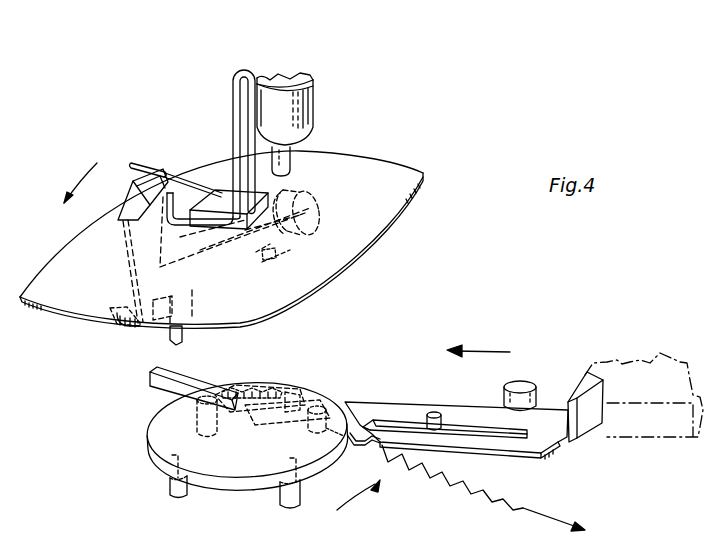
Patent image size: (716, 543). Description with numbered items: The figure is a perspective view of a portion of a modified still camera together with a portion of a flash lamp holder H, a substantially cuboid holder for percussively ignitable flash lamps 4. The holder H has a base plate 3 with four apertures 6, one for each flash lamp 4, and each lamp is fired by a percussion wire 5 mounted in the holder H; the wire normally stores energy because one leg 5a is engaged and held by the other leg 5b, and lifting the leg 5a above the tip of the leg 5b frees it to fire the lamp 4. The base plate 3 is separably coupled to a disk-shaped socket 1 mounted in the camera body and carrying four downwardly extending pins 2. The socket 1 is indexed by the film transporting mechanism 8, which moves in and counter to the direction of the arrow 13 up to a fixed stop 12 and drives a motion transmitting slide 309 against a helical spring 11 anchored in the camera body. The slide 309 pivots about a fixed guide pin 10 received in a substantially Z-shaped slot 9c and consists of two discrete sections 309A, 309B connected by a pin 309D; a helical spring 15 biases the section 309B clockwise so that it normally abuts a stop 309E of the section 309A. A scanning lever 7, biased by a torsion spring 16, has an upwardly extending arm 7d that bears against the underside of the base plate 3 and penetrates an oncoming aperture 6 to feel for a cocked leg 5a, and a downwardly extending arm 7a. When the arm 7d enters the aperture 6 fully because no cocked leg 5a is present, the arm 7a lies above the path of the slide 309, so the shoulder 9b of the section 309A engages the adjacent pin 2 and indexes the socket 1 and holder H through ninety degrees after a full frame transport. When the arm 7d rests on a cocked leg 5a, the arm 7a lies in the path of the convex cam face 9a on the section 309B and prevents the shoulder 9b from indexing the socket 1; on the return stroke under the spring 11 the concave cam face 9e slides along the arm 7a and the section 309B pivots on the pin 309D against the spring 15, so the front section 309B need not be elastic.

The socket 1 is at (220, 490).
The pins 2 is at (170, 492).
The base plate 3 is at (53, 260).
The flash lamps 4 is at (310, 111).
The percussion wire 5 is at (248, 60).
The leg 5a is at (148, 162).
The leg 5b is at (177, 227).
The apertures 6 is at (123, 216).
The scanning lever 7 is at (203, 287).
The arm 7a is at (172, 333).
The arm 7d is at (133, 268).
The film transporting mechanism 8 is at (612, 373).
The convex cam face 9a is at (167, 377).
The shoulder 9b is at (342, 407).
The slot 9c is at (460, 423).
The concave cam face 9e is at (197, 403).
The guide pin 10 is at (430, 411).
The helical spring 11 is at (463, 494).
The stop 12 is at (523, 383).
The arrow 13 is at (480, 347).
The helical spring 15 is at (240, 390).
The torsion spring 16 is at (280, 260).
The motion transmitting slide 309 is at (536, 463).
The section 309A is at (368, 413).
The section 309B is at (200, 387).
The pin 309D is at (300, 398).
The stop 309E is at (283, 390).
The holder H is at (385, 60).